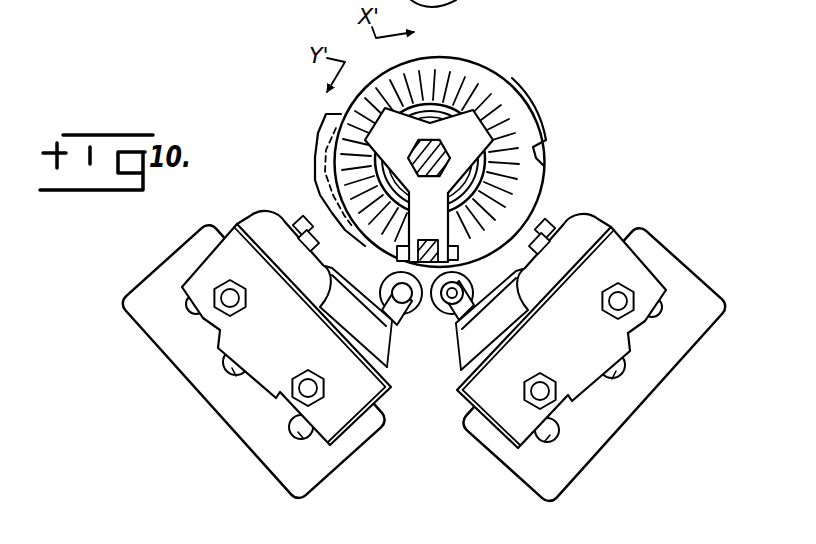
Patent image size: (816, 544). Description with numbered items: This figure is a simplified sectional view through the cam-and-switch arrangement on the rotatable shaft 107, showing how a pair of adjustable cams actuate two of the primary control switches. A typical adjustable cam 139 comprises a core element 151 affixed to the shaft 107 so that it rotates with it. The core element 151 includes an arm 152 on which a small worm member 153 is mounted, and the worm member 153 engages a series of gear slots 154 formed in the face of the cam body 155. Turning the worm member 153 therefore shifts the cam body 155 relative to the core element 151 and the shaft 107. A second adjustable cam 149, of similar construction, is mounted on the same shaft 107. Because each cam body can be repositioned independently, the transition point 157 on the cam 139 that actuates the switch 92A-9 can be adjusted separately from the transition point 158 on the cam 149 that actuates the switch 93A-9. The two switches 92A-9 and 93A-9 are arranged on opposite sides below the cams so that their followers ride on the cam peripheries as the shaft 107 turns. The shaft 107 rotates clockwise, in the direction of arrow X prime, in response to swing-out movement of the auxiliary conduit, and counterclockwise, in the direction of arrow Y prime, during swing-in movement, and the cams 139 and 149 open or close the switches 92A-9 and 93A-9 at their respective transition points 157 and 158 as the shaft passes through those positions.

The shaft 107 is at (431, 148).
The gear slots 154 is at (466, 82).
The transition point 158 is at (514, 81).
The adjustable cam 149 is at (544, 108).
The core element 151 is at (468, 135).
The cam body 155 is at (528, 174).
The arm 152 is at (432, 224).
The worm member 153 is at (426, 263).
The adjustable cam 139 is at (326, 116).
The transition point 157 is at (322, 149).
The switch 92A-9 is at (253, 221).
The switch 93A-9 is at (620, 242).